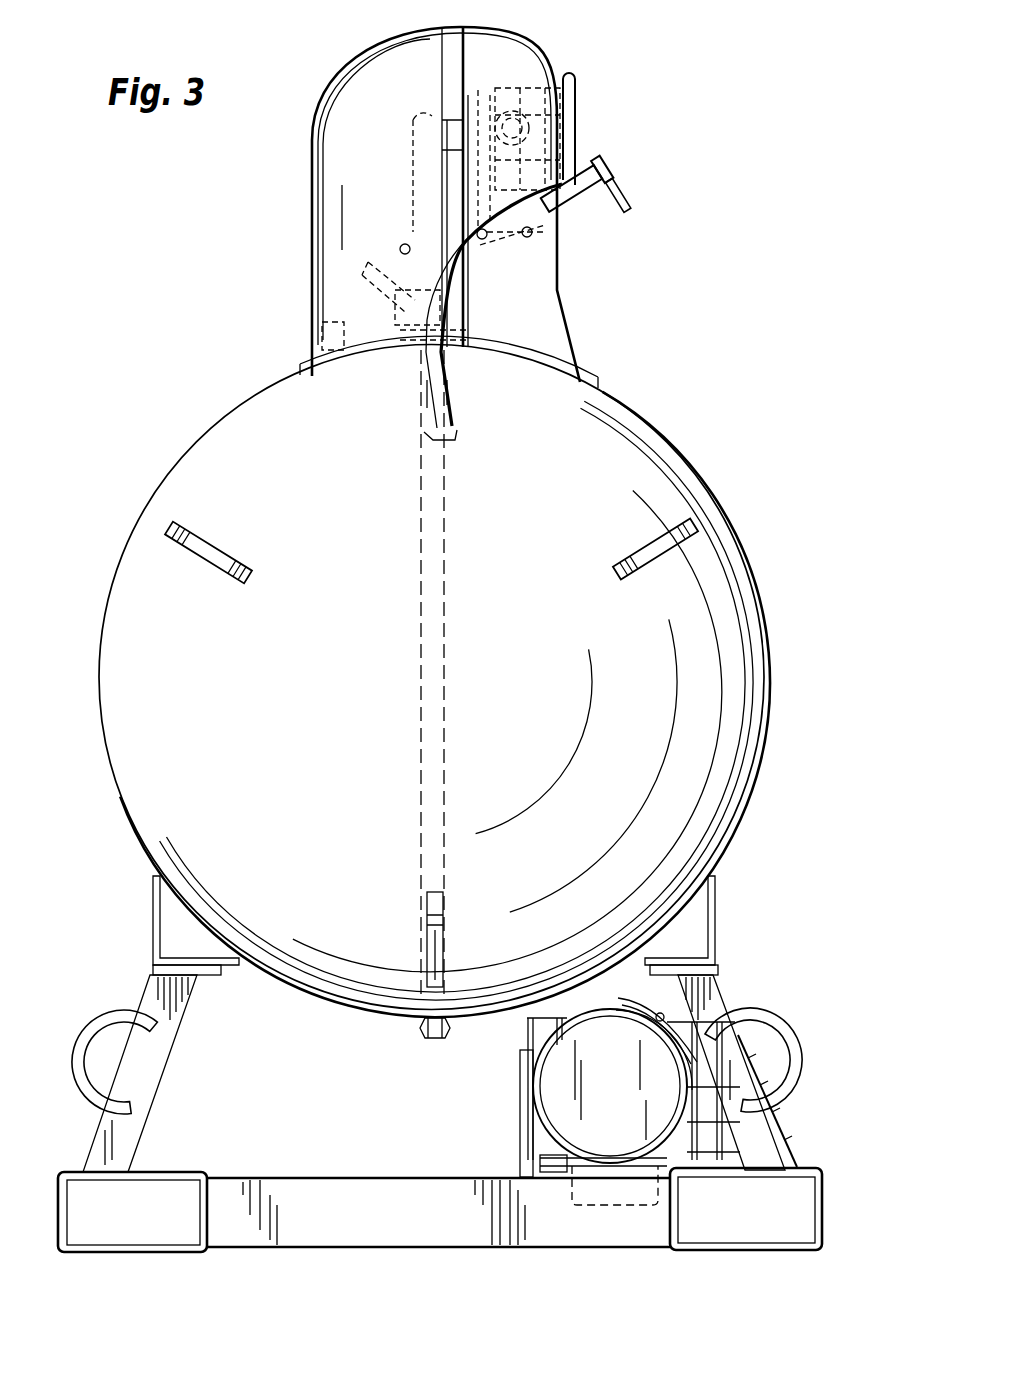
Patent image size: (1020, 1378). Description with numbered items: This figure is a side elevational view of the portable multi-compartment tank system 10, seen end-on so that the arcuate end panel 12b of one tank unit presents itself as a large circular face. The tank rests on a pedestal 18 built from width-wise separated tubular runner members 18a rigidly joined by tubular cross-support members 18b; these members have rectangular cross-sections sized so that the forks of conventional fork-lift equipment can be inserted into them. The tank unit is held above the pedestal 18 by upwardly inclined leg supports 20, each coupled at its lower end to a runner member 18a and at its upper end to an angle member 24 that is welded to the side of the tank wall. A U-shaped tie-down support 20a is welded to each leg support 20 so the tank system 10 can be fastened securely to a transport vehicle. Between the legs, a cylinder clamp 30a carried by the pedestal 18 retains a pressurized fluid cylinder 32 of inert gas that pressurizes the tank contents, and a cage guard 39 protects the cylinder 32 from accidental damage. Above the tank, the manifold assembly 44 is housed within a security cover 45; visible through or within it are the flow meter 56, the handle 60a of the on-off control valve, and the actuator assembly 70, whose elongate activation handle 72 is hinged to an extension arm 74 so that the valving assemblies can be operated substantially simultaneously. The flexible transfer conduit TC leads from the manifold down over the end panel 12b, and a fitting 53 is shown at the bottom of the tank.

The multi-compartment tank system 10 is at (92, 315).
The arcuate end panel 12b is at (306, 700).
The pedestal 18 is at (248, 1252).
The tubular runner member 18a is at (182, 1172).
The tubular cross-support member 18b is at (348, 1214).
The leg support 20 is at (145, 1085).
The U-shaped tie-down support 20a is at (108, 1013).
The angle member 24 is at (150, 943).
The cylinder clamp 30a is at (525, 1076).
The pressurized fluid cylinder 32 is at (630, 1093).
The cage guard 39 is at (782, 1138).
The manifold assembly 44 is at (412, 118).
The security cover 45 is at (378, 159).
The drain fitting 53 is at (418, 1032).
The flow meter 56 is at (541, 56).
The handle 60a is at (577, 86).
The actuator assembly 70 is at (612, 148).
The activation handle 72 is at (625, 204).
The extension arm 74 is at (580, 205).
The transfer conduit TC is at (456, 416).